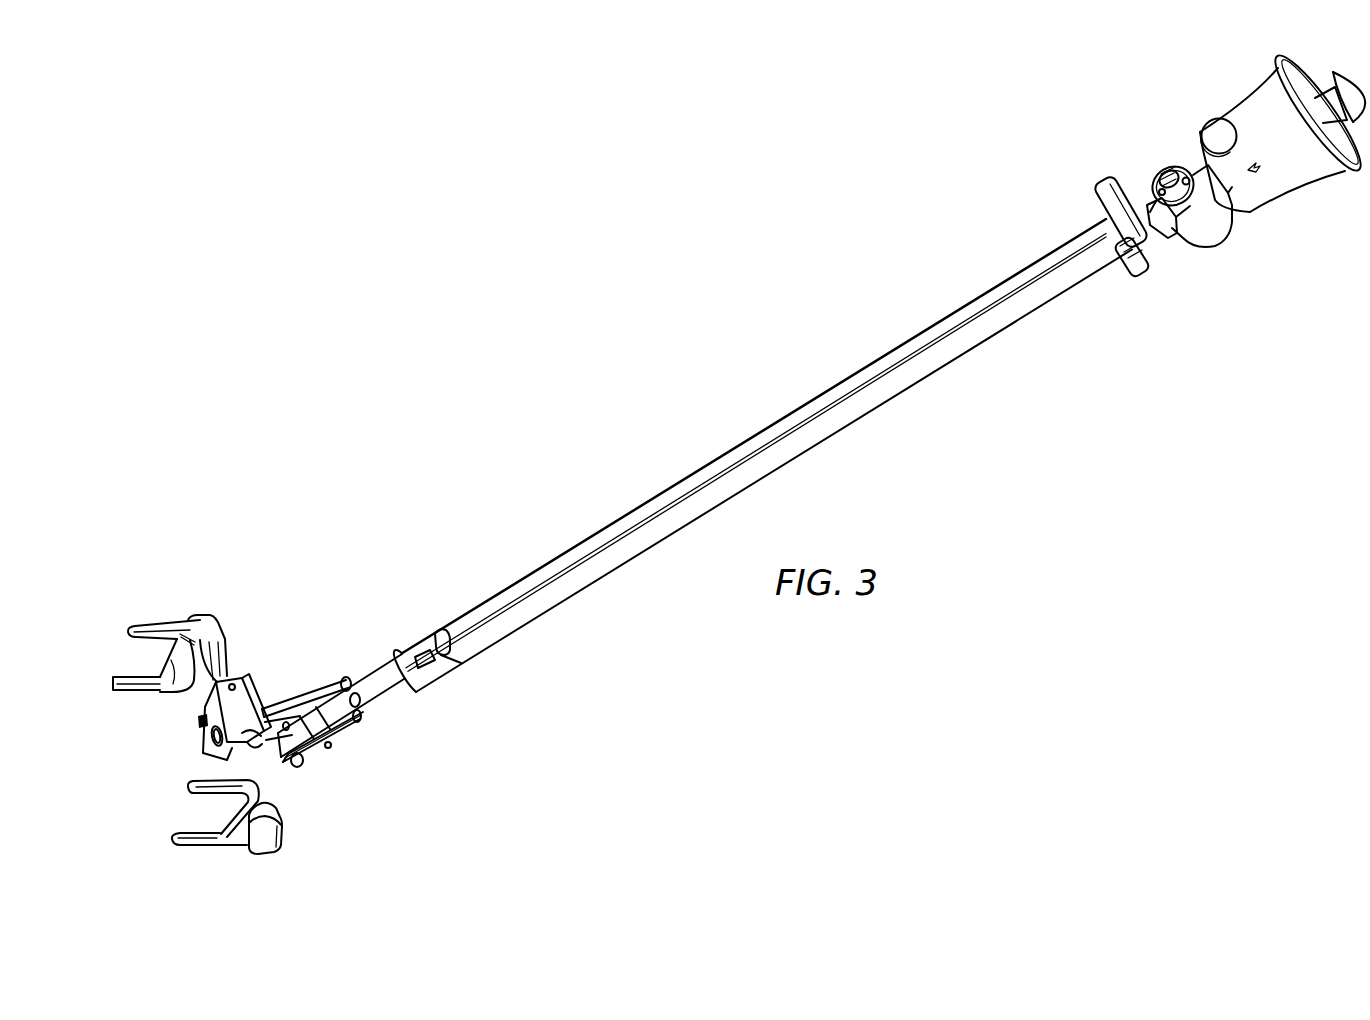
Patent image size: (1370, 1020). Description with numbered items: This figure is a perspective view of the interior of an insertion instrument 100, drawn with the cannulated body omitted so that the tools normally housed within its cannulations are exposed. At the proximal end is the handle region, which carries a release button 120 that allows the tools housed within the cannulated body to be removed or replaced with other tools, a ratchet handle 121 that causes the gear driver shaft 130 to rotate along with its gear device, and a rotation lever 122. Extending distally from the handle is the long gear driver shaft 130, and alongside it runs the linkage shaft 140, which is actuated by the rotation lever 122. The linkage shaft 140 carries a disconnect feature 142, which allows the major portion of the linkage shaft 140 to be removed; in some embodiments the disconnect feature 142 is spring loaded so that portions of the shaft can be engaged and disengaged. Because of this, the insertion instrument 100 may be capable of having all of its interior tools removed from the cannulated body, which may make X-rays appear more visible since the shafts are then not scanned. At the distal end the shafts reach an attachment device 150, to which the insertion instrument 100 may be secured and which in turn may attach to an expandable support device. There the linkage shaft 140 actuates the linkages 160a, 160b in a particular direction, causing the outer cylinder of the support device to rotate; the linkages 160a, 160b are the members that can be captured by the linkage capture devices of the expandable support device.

The insertion instrument 100 is at (722, 338).
The release button 120 is at (1228, 237).
The ratchet handle 121 is at (1267, 92).
The rotation lever 122 is at (1107, 183).
The gear driver shaft 130 is at (583, 590).
The linkage shaft 140 is at (551, 566).
The disconnect feature 142 is at (432, 626).
The attachment device 150 is at (190, 594).
The linkage 160a is at (259, 700).
The linkage 160b is at (262, 773).